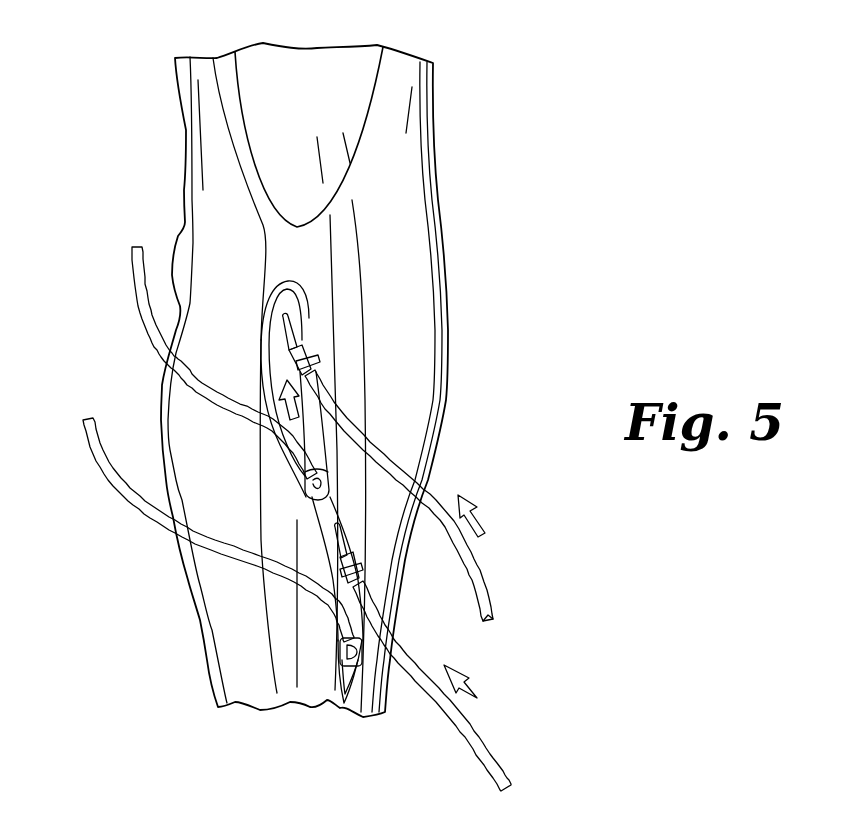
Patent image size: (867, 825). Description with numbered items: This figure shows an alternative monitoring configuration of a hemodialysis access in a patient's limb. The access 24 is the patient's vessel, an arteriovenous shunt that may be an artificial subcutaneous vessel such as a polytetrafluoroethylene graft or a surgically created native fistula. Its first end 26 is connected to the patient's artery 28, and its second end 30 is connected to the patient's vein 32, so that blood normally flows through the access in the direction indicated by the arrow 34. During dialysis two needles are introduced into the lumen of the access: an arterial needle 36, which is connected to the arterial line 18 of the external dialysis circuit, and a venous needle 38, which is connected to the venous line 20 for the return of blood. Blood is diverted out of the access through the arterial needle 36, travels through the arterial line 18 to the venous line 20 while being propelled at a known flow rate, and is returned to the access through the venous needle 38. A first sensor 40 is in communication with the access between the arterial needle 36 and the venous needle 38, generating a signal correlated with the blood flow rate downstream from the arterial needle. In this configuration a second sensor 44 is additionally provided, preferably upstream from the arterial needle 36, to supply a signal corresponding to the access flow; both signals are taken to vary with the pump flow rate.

The arterial line 18 is at (452, 713).
The venous line 20 is at (492, 588).
The access 24 is at (273, 358).
The first end 26 is at (335, 678).
The artery 28 is at (343, 275).
The second end 30 is at (292, 287).
The vein 32 is at (280, 263).
The arrow 34 is at (283, 407).
The arterial needle 36 is at (336, 527).
The venous needle 38 is at (300, 318).
The first sensor 40 is at (318, 478).
The second sensor 44 is at (339, 642).